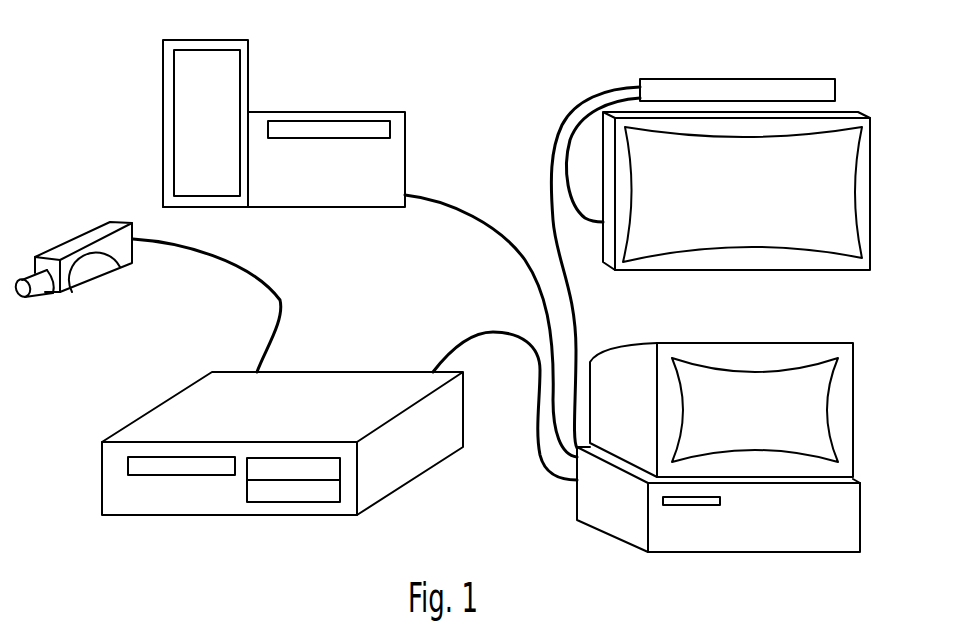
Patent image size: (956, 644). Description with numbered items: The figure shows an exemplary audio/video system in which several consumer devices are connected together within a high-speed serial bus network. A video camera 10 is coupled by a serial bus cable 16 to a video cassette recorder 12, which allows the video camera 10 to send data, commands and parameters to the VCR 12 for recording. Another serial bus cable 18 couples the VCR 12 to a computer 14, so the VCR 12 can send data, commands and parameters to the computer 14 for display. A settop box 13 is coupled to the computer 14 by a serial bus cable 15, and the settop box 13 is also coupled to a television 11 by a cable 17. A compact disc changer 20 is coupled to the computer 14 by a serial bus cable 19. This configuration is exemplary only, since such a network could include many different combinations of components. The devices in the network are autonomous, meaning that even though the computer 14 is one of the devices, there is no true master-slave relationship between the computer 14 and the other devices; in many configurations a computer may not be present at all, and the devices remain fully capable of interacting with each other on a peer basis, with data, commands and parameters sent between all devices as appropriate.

The video camera 10 is at (123, 221).
The television 11 is at (856, 272).
The video cassette recorder 12 is at (428, 467).
The settop box 13 is at (742, 79).
The computer 14 is at (764, 553).
The IEEE 1394-1995 cable 15 is at (547, 178).
The IEEE 1394-1995 cable 16 is at (283, 297).
The cable 17 is at (585, 222).
The IEEE 1394-1995 cable 18 is at (458, 344).
The IEEE 1394-1995 cable 19 is at (527, 267).
The compact disc changer 20 is at (405, 153).